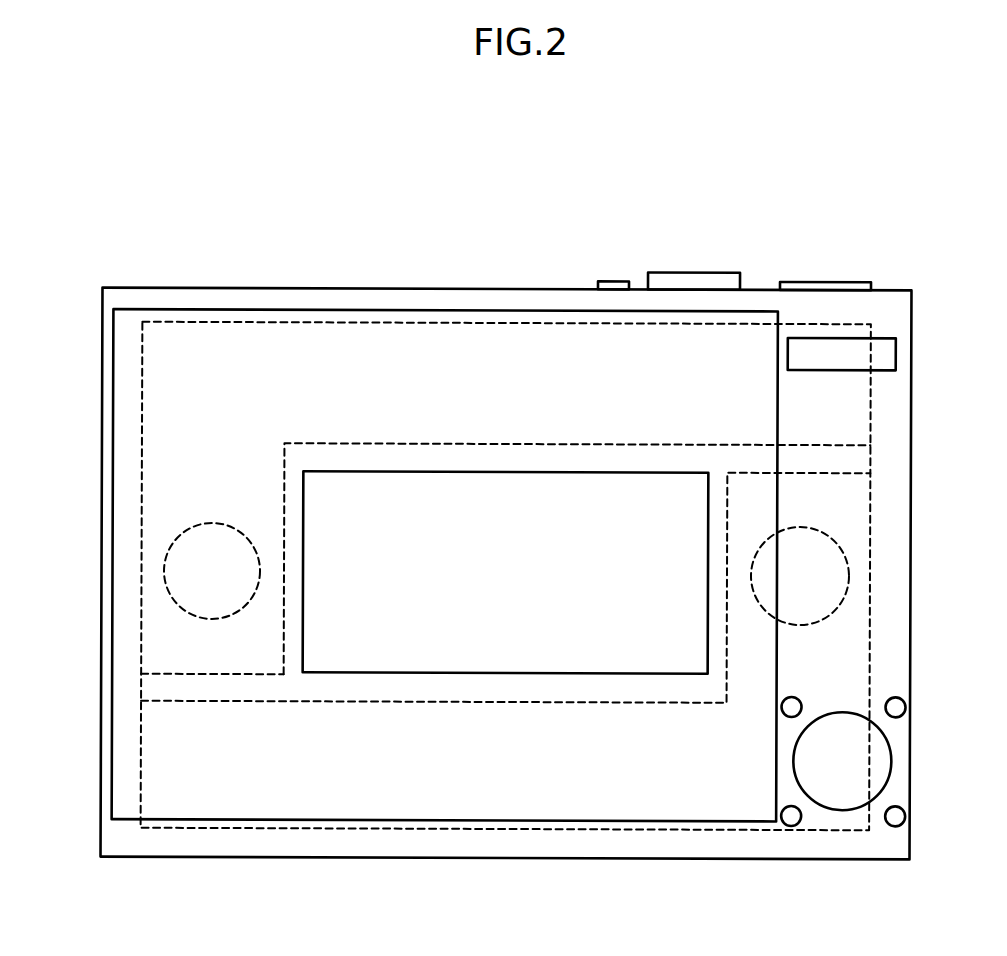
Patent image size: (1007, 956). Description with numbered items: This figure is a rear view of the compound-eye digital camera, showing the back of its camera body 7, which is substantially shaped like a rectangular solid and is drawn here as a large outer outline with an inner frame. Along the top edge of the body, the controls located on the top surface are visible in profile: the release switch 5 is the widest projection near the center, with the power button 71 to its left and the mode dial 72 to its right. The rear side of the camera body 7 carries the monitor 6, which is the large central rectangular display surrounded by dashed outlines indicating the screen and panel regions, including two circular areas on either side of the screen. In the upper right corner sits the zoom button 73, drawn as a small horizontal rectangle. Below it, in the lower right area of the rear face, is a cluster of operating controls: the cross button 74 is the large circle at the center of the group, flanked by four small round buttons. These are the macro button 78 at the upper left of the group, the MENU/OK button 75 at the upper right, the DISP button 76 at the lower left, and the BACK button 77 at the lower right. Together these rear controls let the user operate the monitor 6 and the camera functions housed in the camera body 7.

The release switch 5 is at (694, 275).
The monitor 6 is at (145, 685).
The camera body 7 is at (120, 830).
The power button 71 is at (611, 281).
The mode dial 72 is at (826, 281).
The zoom button 73 is at (888, 354).
The cross button 74 is at (882, 761).
The MENU/OK button 75 is at (906, 706).
The DISP button 76 is at (792, 826).
The BACK button 77 is at (906, 816).
The macro button 78 is at (799, 699).